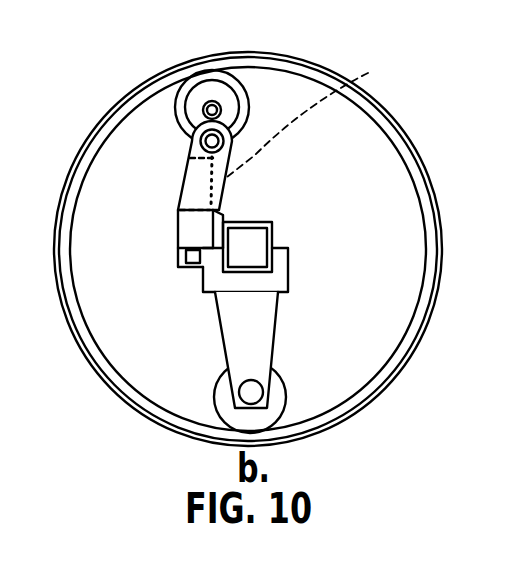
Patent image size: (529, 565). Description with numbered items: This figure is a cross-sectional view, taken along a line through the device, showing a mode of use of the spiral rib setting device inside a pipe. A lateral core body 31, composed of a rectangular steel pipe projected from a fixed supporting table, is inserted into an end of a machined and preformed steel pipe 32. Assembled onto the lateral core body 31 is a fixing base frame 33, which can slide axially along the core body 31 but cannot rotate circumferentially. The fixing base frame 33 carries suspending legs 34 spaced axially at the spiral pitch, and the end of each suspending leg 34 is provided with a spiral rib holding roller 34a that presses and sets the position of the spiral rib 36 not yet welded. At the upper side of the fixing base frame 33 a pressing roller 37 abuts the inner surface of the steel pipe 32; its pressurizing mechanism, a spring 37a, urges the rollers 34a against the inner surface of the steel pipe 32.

The lateral core body 31 is at (273, 233).
The steel pipe 32 is at (436, 208).
The fixing base frame 33 is at (288, 268).
The suspending legs 34 is at (273, 322).
The spiral rib holding rollers 34a is at (342, 382).
The spiral rib 36 is at (91, 342).
The pressing roller 37 is at (243, 83).
The spring 37a is at (314, 130).